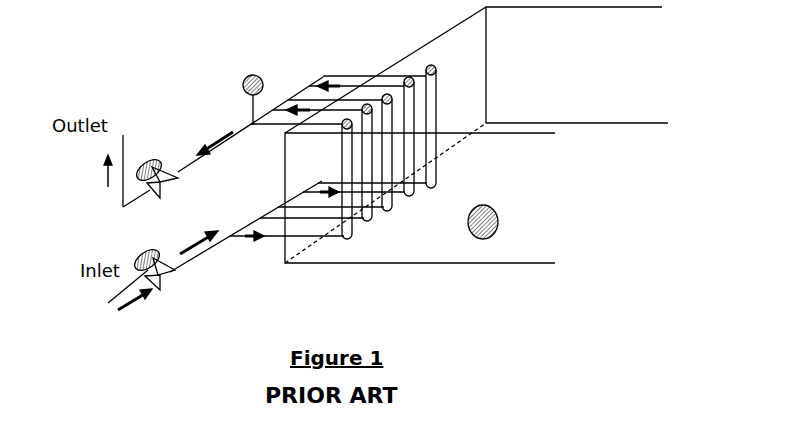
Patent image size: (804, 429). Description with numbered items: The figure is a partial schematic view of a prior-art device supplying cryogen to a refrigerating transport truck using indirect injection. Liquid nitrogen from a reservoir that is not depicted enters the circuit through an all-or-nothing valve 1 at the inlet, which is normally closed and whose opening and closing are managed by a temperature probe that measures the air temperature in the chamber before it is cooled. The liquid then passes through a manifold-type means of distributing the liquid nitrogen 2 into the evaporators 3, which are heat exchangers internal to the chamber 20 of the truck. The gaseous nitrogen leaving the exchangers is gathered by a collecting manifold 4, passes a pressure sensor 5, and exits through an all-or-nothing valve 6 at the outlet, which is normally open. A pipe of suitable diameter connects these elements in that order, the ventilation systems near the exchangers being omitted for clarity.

The all-or-nothing valve at the inlet 1 is at (161, 271).
The means of distributing the liquid nitrogen 2 is at (298, 226).
The evaporators 3 is at (404, 152).
The manifold for collecting the gaseous nitrogen 4 is at (302, 116).
The pressure sensor 5 is at (238, 99).
The all-or-nothing valve at the outlet 6 is at (155, 166).
The chamber 20 is at (476, 135).